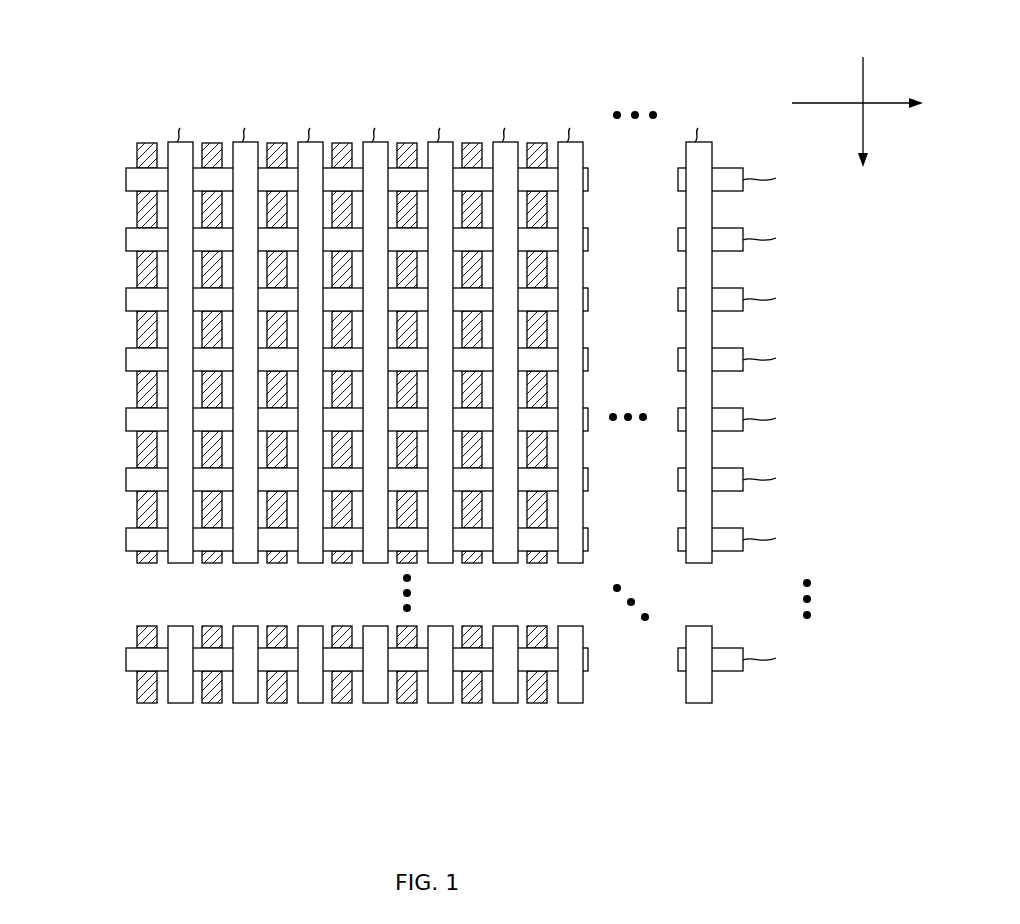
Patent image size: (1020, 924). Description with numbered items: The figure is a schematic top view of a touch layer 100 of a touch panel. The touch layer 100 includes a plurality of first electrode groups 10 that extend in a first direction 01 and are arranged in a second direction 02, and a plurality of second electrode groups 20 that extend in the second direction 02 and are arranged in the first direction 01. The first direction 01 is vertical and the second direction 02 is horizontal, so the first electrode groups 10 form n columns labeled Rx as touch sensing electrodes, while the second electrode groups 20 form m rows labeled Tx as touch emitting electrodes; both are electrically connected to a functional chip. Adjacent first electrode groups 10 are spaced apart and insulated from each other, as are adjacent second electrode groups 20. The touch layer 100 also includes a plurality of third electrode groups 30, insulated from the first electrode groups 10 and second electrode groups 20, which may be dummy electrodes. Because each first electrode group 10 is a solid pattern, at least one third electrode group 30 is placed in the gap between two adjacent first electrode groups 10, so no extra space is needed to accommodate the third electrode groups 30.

The touch layer 100 is at (162, 72).
The first electrode group 10 is at (372, 705).
The second electrode group 20 is at (125, 236).
The third electrode group 30 is at (212, 705).
The first direction 01 is at (872, 99).
The second direction 02 is at (839, 111).